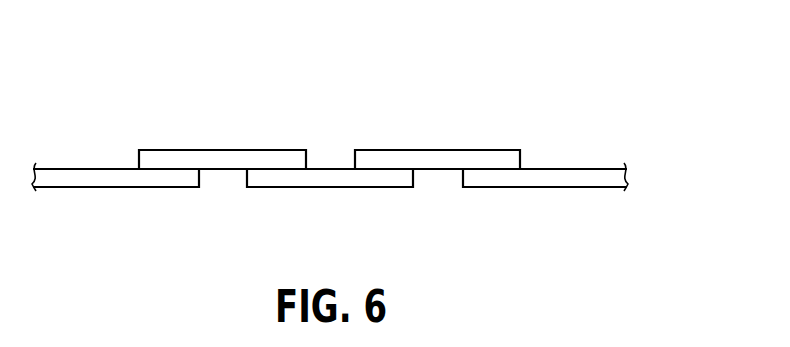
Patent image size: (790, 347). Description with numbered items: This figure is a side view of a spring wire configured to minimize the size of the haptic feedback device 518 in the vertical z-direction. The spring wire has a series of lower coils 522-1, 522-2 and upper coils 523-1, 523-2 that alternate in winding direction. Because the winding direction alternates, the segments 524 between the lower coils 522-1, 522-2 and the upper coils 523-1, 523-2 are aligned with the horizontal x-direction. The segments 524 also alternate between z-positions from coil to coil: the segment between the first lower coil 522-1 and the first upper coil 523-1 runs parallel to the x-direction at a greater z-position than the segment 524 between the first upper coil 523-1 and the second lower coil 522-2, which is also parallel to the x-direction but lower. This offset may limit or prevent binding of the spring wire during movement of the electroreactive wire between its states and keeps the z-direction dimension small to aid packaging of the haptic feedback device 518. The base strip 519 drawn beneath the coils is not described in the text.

The haptic feedback device 518 is at (642, 84).
The base strip 519 is at (541, 188).
The first lower coil 522-1 is at (144, 148).
The second lower coil 522-2 is at (381, 148).
The first upper coil 523-1 is at (295, 148).
The second upper coil 523-2 is at (508, 149).
The segment 524 is at (221, 148).